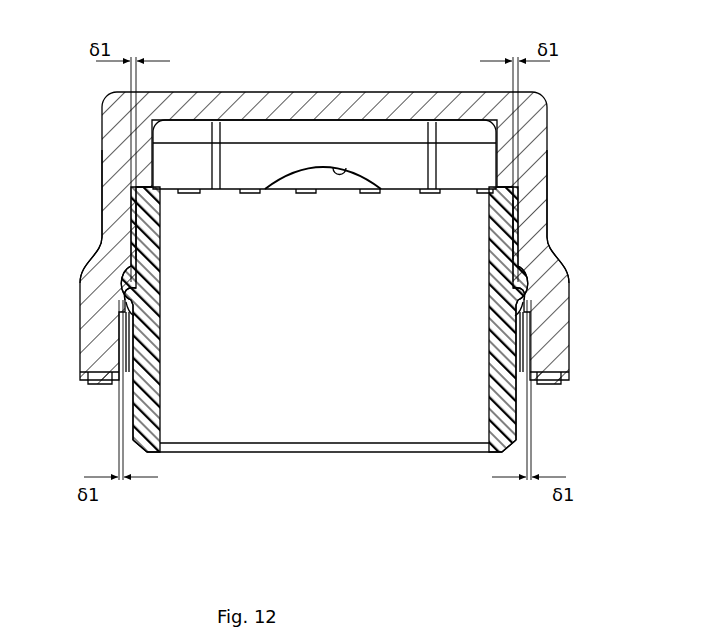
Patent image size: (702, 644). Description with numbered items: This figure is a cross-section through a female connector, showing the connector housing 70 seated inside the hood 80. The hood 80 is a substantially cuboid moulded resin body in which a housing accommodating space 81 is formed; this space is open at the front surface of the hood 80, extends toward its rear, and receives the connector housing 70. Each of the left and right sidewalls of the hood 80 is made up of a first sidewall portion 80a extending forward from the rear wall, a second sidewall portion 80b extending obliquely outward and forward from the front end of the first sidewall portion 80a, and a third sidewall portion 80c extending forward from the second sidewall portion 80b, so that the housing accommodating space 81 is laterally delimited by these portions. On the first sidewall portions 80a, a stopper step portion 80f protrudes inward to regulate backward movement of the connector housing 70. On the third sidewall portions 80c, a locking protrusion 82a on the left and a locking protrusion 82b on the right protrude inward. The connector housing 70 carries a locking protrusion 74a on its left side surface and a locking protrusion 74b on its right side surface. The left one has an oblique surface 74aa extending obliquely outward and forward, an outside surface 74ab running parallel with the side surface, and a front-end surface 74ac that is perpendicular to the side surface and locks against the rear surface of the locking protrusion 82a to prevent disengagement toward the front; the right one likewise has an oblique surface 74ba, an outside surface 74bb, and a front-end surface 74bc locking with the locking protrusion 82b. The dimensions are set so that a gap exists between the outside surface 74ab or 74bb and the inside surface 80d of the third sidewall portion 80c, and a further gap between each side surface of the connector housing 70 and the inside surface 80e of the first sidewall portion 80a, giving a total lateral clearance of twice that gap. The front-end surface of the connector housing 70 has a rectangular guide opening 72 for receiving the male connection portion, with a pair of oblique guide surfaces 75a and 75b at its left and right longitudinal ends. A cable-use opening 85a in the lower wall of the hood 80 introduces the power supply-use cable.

The connector housing 70 is at (283, 175).
The guide opening 72 is at (345, 453).
The locking protrusion 74a is at (125, 300).
The locking protrusion 74b is at (521, 300).
The oblique surface 74aa is at (158, 277).
The oblique surface 74ba is at (492, 277).
The outside surface 74ab is at (124, 314).
The outside surface 74bb is at (523, 314).
The front-end surface 74ac is at (155, 311).
The front-end surface 74bc is at (494, 311).
The oblique guide surface 75a is at (150, 453).
The oblique guide surface 75b is at (500, 453).
The hood 80 is at (463, 78).
The first sidewall portion 80a is at (110, 209).
The second sidewall portion 80b is at (90, 262).
The third sidewall portion 80c is at (88, 366).
The inside surface 80d is at (120, 283).
The inside surface 80e is at (128, 230).
The stopper step portion 80f is at (143, 178).
The housing accommodating space 81 is at (392, 130).
The locking protrusion 82a is at (122, 336).
The locking protrusion 82b is at (527, 336).
The cable-use opening 85a is at (344, 166).